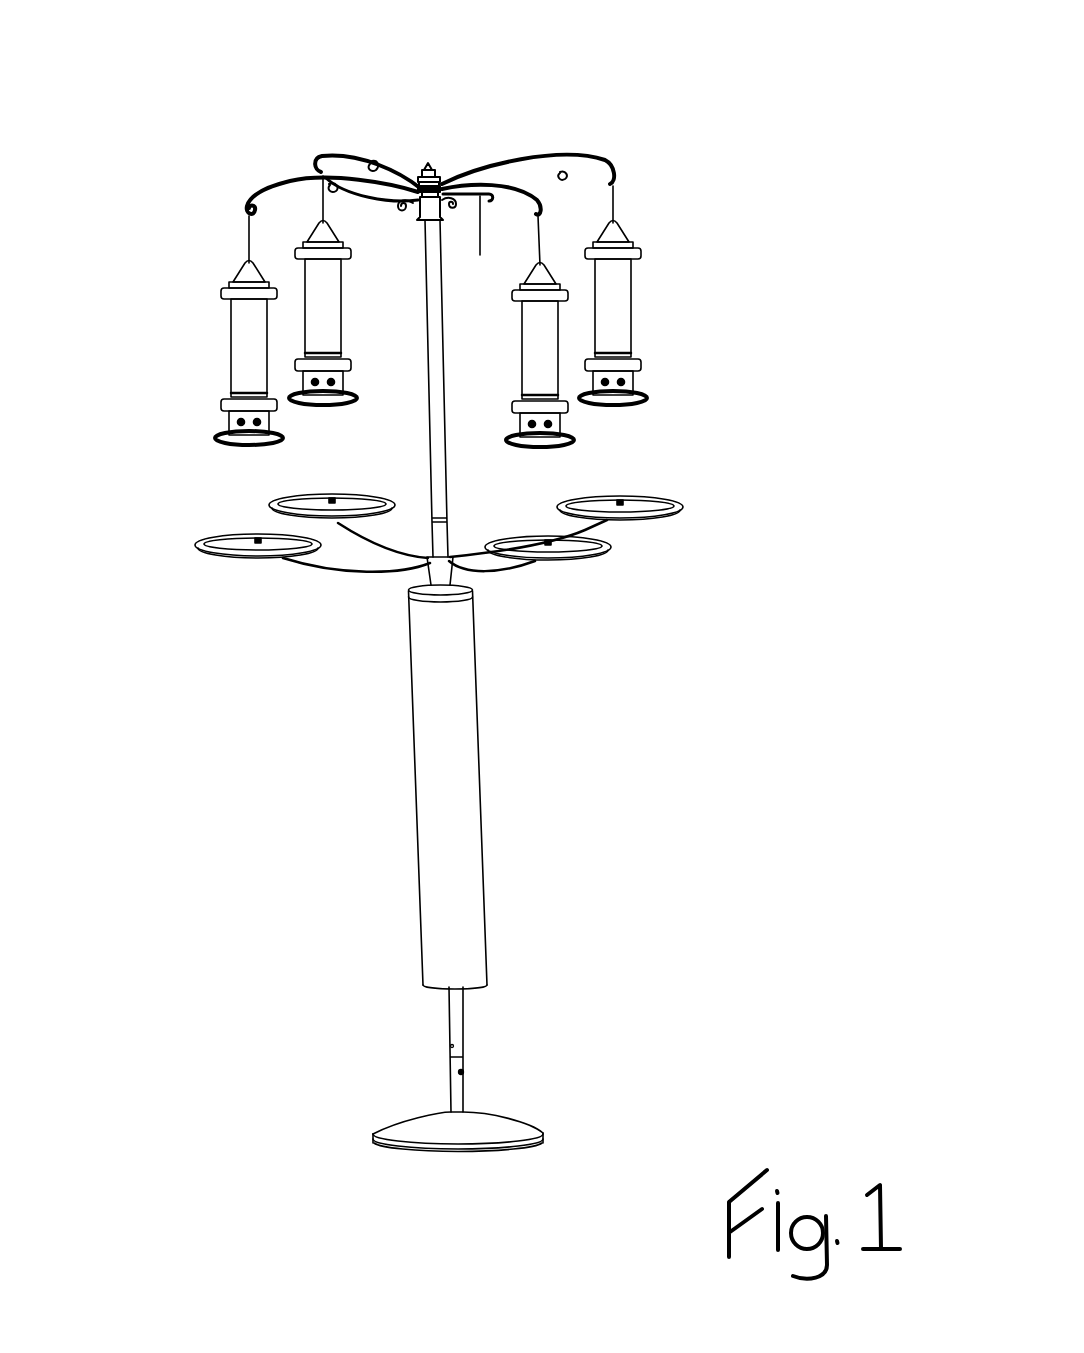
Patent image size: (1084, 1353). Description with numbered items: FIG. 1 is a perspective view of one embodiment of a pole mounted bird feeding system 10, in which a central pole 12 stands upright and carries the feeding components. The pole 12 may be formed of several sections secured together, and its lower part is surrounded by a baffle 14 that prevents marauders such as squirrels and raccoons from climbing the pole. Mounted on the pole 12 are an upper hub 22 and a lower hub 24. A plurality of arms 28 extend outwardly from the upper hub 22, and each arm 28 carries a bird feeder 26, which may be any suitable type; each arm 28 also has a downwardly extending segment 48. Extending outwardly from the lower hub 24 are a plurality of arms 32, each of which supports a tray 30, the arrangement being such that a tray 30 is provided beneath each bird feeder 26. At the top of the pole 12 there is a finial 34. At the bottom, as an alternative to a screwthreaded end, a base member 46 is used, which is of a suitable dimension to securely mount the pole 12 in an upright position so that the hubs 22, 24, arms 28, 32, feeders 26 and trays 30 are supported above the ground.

The pole mounted bird feeding system 10 is at (730, 92).
The central pole 12 is at (435, 382).
The baffle 14 is at (483, 810).
The upper hub 22 is at (421, 212).
The lower hub 24 is at (425, 568).
The bird feeder 26 is at (242, 372).
The arm 28 is at (572, 152).
The tray 30 is at (680, 497).
The arm 32 is at (498, 574).
The finial 34 is at (441, 165).
The base member 46 is at (520, 1123).
The downwardly extending segment 48 is at (469, 241).